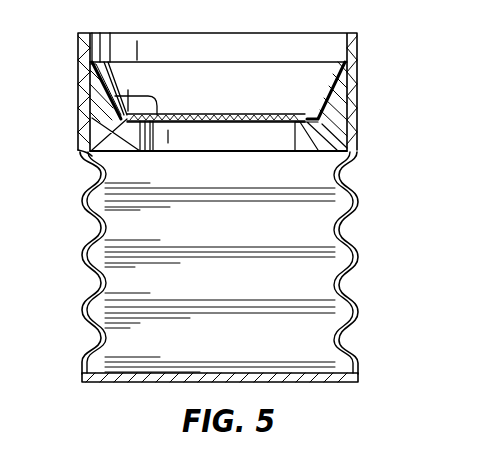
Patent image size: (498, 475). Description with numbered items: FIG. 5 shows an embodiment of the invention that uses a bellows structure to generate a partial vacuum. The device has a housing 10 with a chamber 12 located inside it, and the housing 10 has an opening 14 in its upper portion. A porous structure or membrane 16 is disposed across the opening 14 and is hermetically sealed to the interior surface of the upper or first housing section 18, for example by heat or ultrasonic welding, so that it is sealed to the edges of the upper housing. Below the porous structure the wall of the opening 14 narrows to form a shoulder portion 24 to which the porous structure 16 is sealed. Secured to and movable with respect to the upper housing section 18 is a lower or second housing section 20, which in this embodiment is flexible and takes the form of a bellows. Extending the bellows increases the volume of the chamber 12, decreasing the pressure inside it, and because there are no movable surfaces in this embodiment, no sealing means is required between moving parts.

The housing 10 is at (244, 207).
The chamber 12 is at (292, 210).
The opening 14 is at (292, 88).
The porous structure or membrane 16 is at (113, 97).
The upper housing section 18 is at (337, 119).
The lower housing section 20 is at (357, 366).
The shoulder portion 24 is at (90, 160).